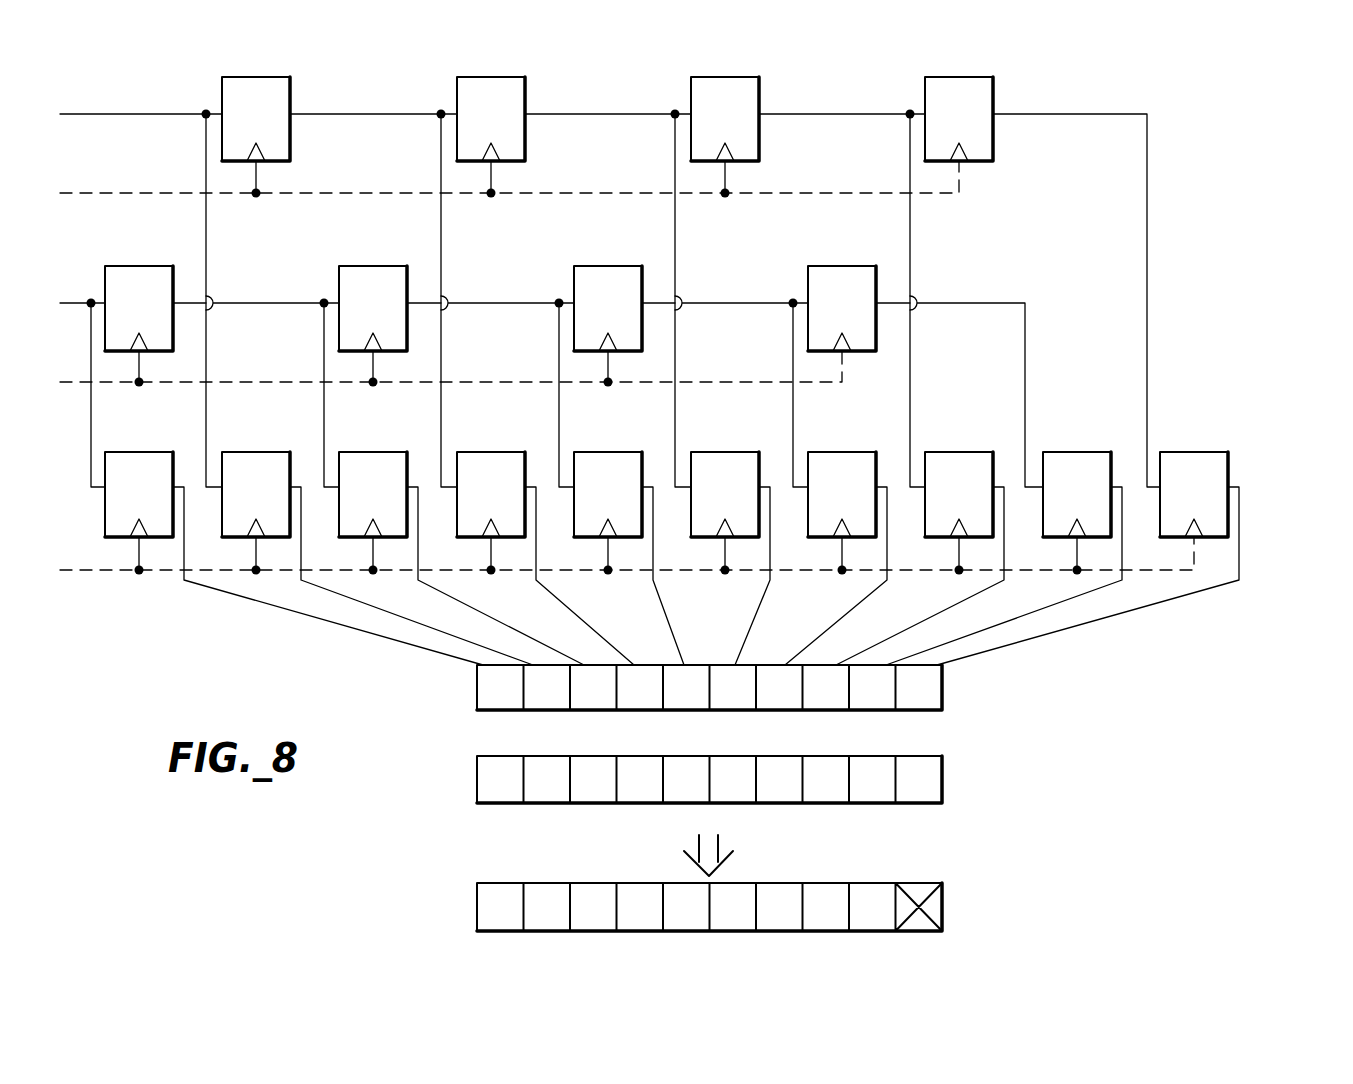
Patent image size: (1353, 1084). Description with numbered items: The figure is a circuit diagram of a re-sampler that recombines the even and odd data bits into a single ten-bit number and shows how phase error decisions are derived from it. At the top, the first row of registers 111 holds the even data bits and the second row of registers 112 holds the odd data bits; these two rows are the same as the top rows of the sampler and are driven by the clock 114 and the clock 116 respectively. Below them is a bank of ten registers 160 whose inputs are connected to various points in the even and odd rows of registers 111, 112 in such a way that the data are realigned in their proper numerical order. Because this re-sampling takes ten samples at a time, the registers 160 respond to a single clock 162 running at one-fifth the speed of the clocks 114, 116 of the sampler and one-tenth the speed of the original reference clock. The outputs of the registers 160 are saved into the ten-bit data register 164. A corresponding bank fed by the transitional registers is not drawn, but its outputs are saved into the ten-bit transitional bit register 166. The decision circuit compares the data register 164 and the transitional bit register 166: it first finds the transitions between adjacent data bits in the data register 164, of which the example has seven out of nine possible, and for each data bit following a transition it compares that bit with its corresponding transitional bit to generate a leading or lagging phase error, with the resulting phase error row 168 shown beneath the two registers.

The first row of registers 111 is at (1168, 75).
The second row of registers 112 is at (1168, 272).
The clock 114 is at (153, 192).
The clock 116 is at (113, 384).
The bank of ten registers 160 is at (1267, 455).
The single clock 162 is at (112, 572).
The 10-bit register 164 is at (477, 684).
The 10-bit transitional bit register 166 is at (477, 776).
The phase error register 168 is at (477, 893).